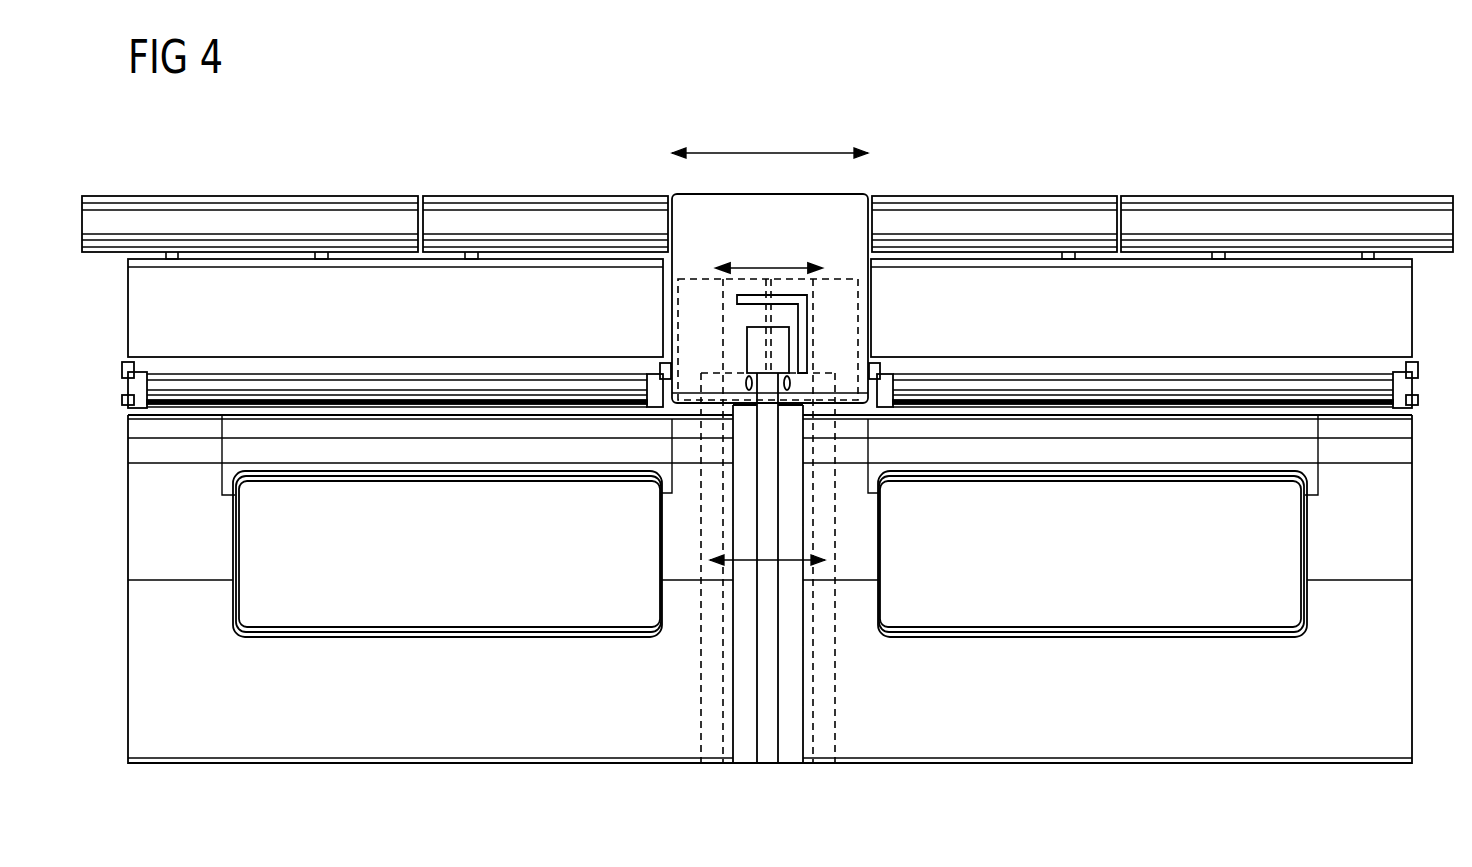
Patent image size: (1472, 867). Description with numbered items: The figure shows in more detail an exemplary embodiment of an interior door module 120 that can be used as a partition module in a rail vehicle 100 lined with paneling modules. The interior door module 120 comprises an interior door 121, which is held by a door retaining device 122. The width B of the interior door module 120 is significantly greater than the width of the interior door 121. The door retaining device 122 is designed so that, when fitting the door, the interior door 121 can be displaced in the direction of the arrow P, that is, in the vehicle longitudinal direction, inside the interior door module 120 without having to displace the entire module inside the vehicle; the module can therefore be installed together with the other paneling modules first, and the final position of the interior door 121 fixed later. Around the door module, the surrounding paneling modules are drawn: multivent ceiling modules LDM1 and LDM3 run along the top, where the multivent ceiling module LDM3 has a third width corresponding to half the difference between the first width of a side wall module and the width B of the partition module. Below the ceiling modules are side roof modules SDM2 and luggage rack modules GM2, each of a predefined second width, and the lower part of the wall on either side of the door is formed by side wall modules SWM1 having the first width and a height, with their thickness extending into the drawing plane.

The rail vehicle 100 is at (618, 158).
The interior door module 120 is at (827, 207).
The interior door 121 is at (770, 707).
The door retaining device 122 is at (780, 347).
The multivent ceiling module LDM1 is at (279, 196).
The multivent ceiling module LDM3 is at (478, 196).
The side roof module SDM2 is at (375, 258).
The luggage rack module GM2 is at (362, 372).
The side wall module SWM1 is at (485, 765).
The width of the partition module B is at (770, 138).
The arrow P is at (767, 545).